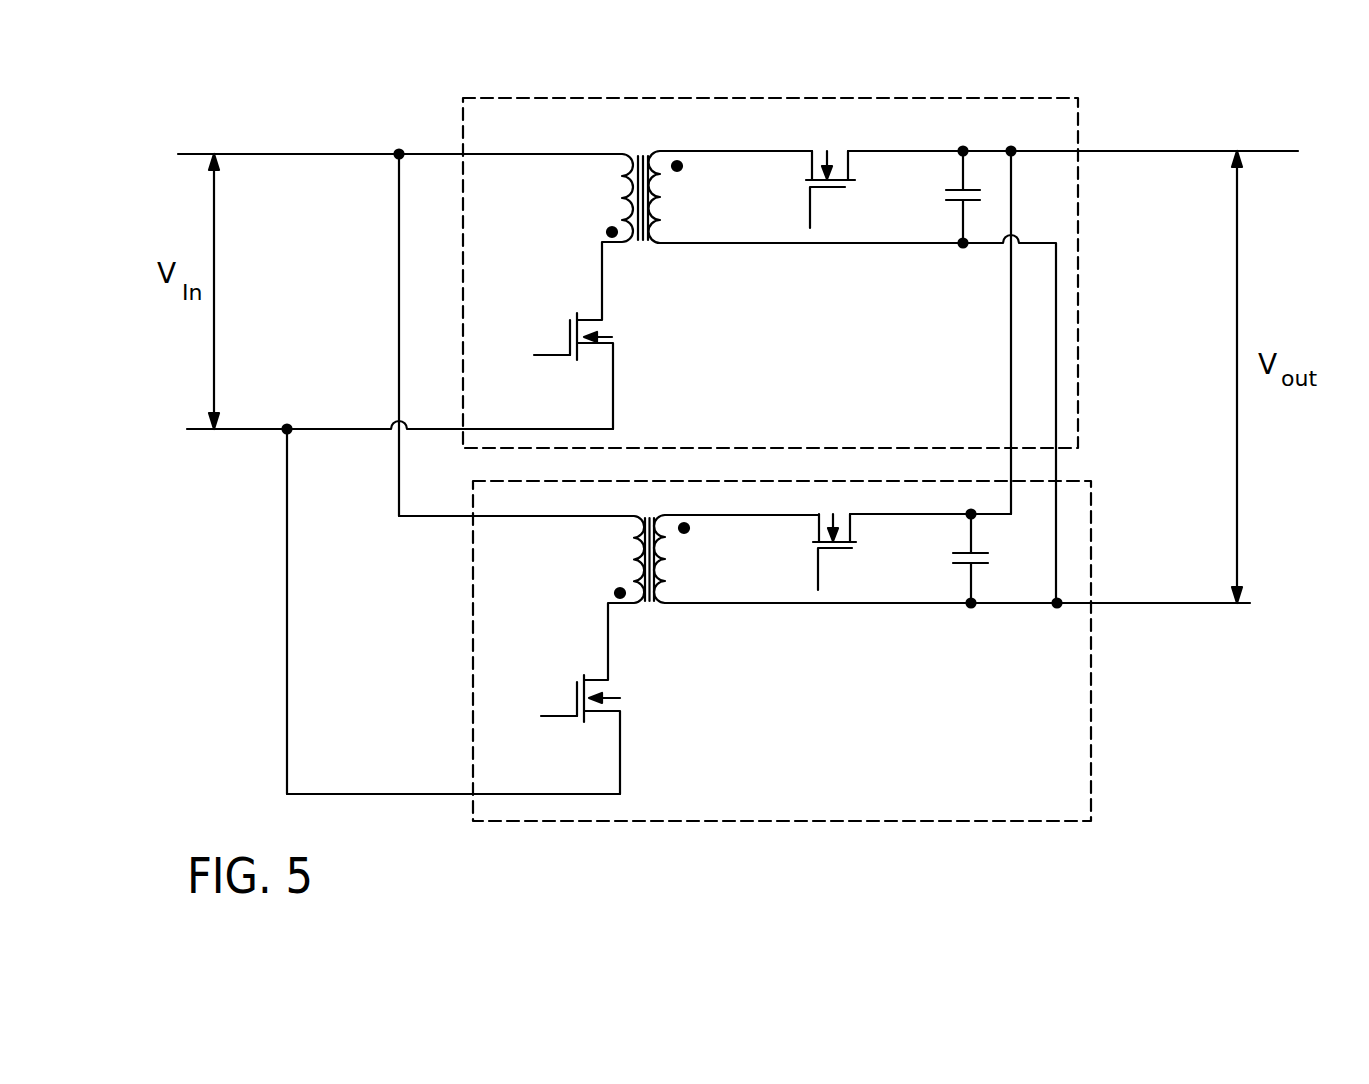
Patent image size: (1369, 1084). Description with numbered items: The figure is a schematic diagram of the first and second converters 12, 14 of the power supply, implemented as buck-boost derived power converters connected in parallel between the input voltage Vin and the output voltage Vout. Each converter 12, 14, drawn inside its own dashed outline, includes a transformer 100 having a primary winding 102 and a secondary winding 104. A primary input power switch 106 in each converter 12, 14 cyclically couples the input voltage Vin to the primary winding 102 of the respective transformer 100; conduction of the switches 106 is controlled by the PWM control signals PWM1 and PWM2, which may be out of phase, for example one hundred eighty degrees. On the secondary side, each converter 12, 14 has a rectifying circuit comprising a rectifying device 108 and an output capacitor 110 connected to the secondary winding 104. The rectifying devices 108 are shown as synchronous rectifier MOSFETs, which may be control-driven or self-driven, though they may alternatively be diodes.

The first converter 12 is at (1078, 130).
The second converter 14 is at (1091, 519).
The transformer 100 is at (609, 364).
The primary winding 102 is at (566, 237).
The secondary winding 104 is at (731, 197).
The primary input power switch 106 is at (628, 553).
The rectifying device 108 is at (877, 378).
The output capacitor 110 is at (966, 381).